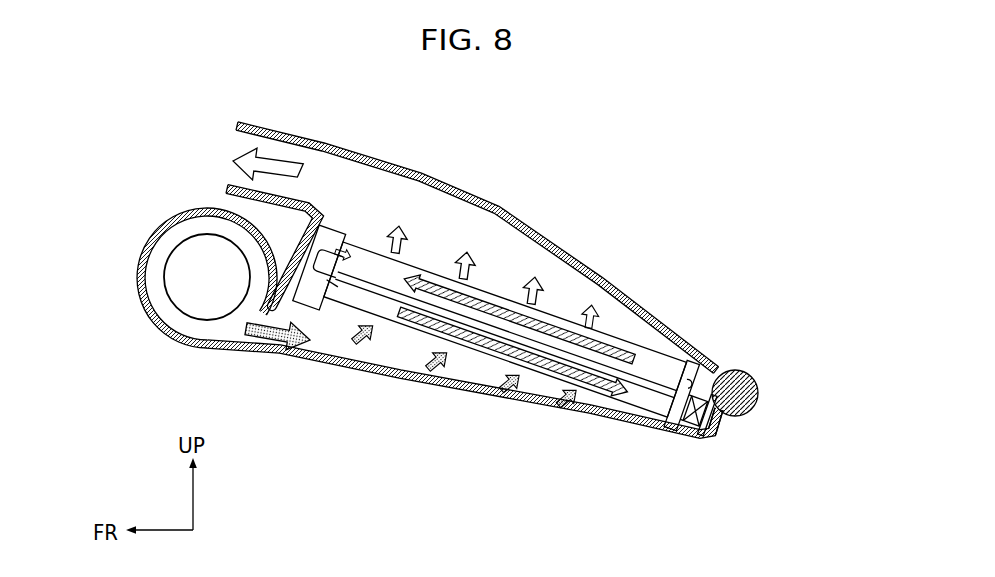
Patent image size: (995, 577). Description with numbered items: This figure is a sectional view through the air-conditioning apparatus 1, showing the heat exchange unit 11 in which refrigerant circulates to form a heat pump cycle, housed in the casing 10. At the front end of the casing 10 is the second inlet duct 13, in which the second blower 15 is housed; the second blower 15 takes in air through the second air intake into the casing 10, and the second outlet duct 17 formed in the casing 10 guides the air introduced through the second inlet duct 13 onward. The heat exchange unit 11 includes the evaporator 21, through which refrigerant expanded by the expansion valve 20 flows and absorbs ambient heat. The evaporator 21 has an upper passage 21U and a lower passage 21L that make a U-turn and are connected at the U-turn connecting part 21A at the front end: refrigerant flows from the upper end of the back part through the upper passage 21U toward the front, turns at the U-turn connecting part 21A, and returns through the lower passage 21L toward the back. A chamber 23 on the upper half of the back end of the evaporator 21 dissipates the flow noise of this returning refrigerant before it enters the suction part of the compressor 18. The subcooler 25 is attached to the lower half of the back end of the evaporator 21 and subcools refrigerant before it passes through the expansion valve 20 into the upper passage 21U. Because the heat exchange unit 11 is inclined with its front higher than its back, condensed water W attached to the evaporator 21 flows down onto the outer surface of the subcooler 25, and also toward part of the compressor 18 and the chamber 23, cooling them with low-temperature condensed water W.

The air-conditioning apparatus 1 is at (503, 180).
The casing 10 is at (575, 248).
The heat exchange unit 11 is at (608, 413).
The second inlet duct 13 is at (177, 210).
The second blower 15 is at (183, 292).
The second outlet duct 17 is at (283, 127).
The compressor 18 is at (768, 375).
The expansion valve 20 is at (723, 411).
The evaporator 21 is at (357, 236).
The U-turn connecting part 21A is at (330, 224).
The upper passage 21U is at (370, 257).
The lower passage 21L is at (360, 300).
The chamber 23 is at (747, 373).
The subcooler 25 is at (715, 430).
The condensed water W is at (695, 433).